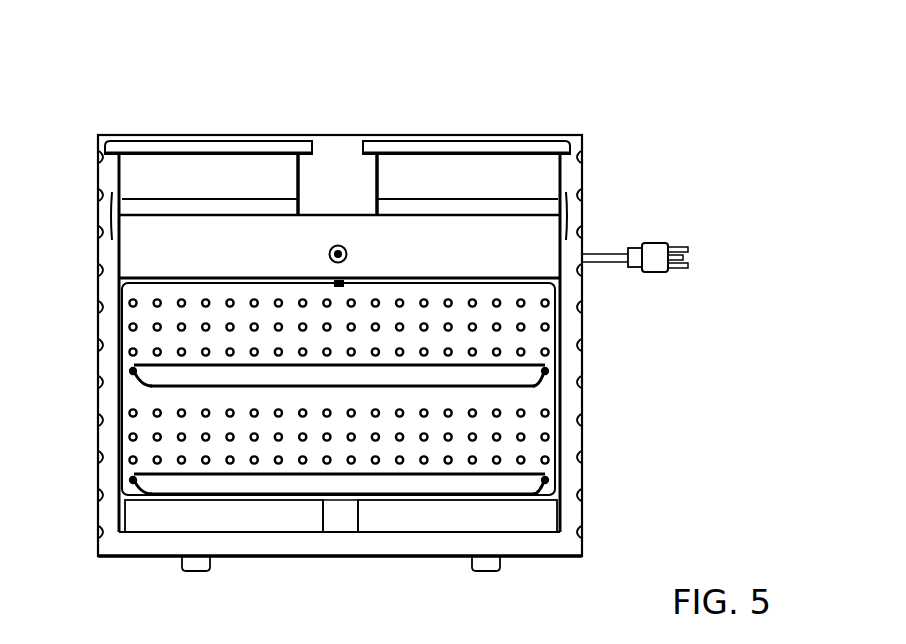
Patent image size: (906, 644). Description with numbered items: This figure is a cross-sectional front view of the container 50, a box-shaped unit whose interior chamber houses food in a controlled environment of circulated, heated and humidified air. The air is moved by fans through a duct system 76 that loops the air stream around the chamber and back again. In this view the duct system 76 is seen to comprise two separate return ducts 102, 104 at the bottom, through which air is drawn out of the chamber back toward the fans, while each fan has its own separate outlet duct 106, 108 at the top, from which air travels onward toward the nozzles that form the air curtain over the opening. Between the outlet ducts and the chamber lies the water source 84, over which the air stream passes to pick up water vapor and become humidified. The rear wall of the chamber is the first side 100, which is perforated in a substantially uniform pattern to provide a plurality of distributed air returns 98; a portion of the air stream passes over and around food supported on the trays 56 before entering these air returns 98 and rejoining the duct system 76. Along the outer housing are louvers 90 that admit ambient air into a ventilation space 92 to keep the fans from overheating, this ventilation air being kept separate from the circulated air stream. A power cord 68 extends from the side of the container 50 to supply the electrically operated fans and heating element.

The container 50 is at (94, 104).
The trays 56 is at (550, 467).
The power cord 68 is at (618, 256).
The duct system 76 is at (412, 168).
The water source 84 is at (466, 238).
The louvers 90 is at (582, 479).
The ventilation space 92 is at (574, 468).
The air returns 98 is at (476, 326).
The first side 100 is at (168, 423).
The duct 102 is at (172, 520).
The duct 104 is at (528, 512).
The outlet duct 106 is at (186, 173).
The outlet duct 108 is at (512, 170).